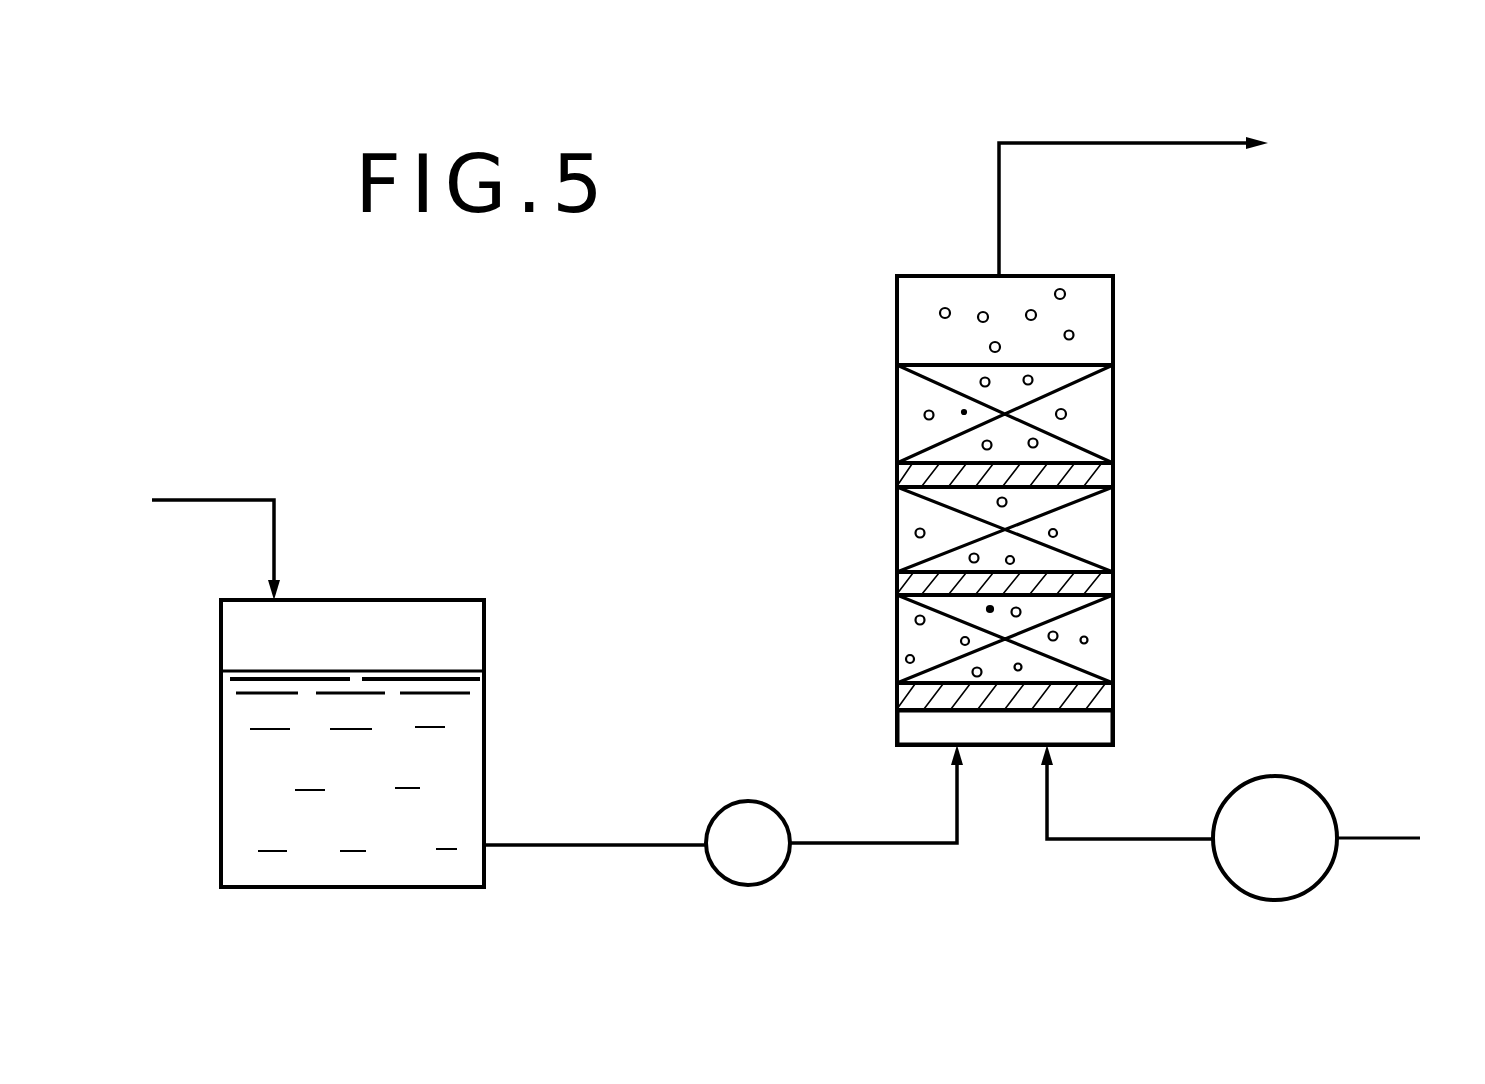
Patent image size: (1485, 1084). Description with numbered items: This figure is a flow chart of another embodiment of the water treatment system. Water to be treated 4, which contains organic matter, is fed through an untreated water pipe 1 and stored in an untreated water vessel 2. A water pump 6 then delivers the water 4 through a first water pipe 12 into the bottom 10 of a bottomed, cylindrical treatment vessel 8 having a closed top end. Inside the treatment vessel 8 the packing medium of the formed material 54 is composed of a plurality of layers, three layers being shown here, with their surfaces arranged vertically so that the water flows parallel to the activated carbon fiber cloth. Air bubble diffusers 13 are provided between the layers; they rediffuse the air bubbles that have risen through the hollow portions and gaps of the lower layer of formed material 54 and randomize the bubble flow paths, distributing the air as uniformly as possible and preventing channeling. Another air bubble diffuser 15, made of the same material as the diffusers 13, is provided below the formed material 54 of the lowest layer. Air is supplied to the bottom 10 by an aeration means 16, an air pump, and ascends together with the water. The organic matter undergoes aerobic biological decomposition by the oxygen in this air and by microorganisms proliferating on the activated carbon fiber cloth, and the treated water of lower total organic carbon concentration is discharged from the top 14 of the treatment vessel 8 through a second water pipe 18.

The untreated water pipe 1 is at (236, 497).
The untreated water vessel 2 is at (450, 600).
The water to be treated 4 is at (450, 776).
The water pump 6 is at (741, 801).
The treatment vessel 8 is at (1113, 547).
The bottom of treatment vessel 10 is at (912, 746).
The first water pipe 12 is at (960, 812).
The air bubble diffuser 13 is at (897, 475).
The top of treatment vessel 14 is at (897, 315).
The air bubble diffuser 15 is at (897, 697).
The aeration means 16 is at (1268, 776).
The second water pipe 18 is at (998, 195).
The formed material 54 is at (1097, 424).